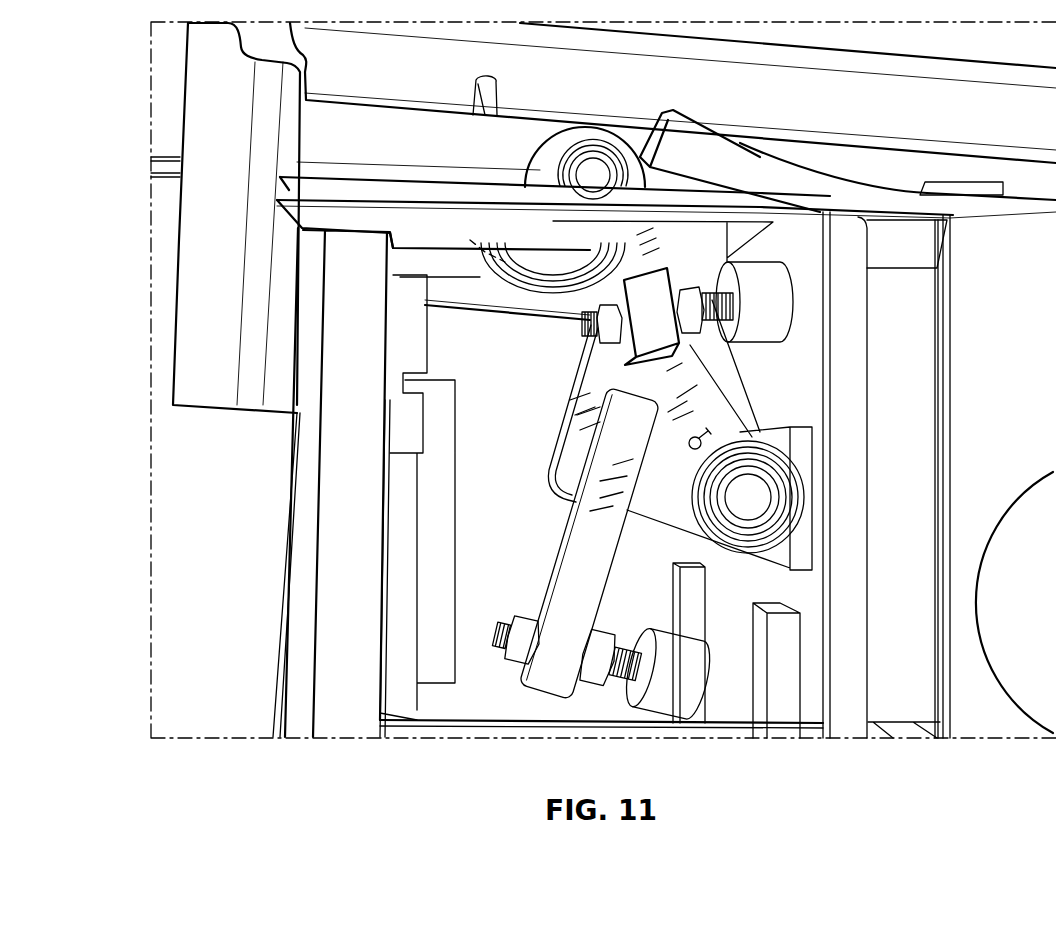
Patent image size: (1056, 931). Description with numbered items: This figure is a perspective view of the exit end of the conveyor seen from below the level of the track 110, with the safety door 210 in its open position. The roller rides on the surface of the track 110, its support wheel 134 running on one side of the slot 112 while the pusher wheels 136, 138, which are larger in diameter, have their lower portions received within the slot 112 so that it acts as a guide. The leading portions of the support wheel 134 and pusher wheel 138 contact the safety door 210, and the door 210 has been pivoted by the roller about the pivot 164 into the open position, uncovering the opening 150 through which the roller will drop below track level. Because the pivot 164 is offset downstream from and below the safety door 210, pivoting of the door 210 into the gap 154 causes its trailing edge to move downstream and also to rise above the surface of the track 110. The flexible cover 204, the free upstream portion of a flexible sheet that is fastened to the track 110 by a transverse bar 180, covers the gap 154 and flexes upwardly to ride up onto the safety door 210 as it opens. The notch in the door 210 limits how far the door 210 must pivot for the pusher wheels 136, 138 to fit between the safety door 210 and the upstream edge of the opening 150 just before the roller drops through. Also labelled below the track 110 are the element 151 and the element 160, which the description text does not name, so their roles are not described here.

The track 110 is at (471, 190).
The slot 112 is at (424, 257).
The support wheel 134 is at (587, 140).
The pusher wheel 136 is at (550, 258).
The pusher wheel 138 is at (560, 285).
The opening 150 is at (560, 250).
The pin 151 is at (598, 252).
The gap 154 is at (739, 242).
The bracket assembly 160 is at (711, 255).
The pivot 164 is at (753, 487).
The transverse bar 180 is at (937, 183).
The flexible cover 204 is at (717, 140).
The safety door 210 is at (670, 173).